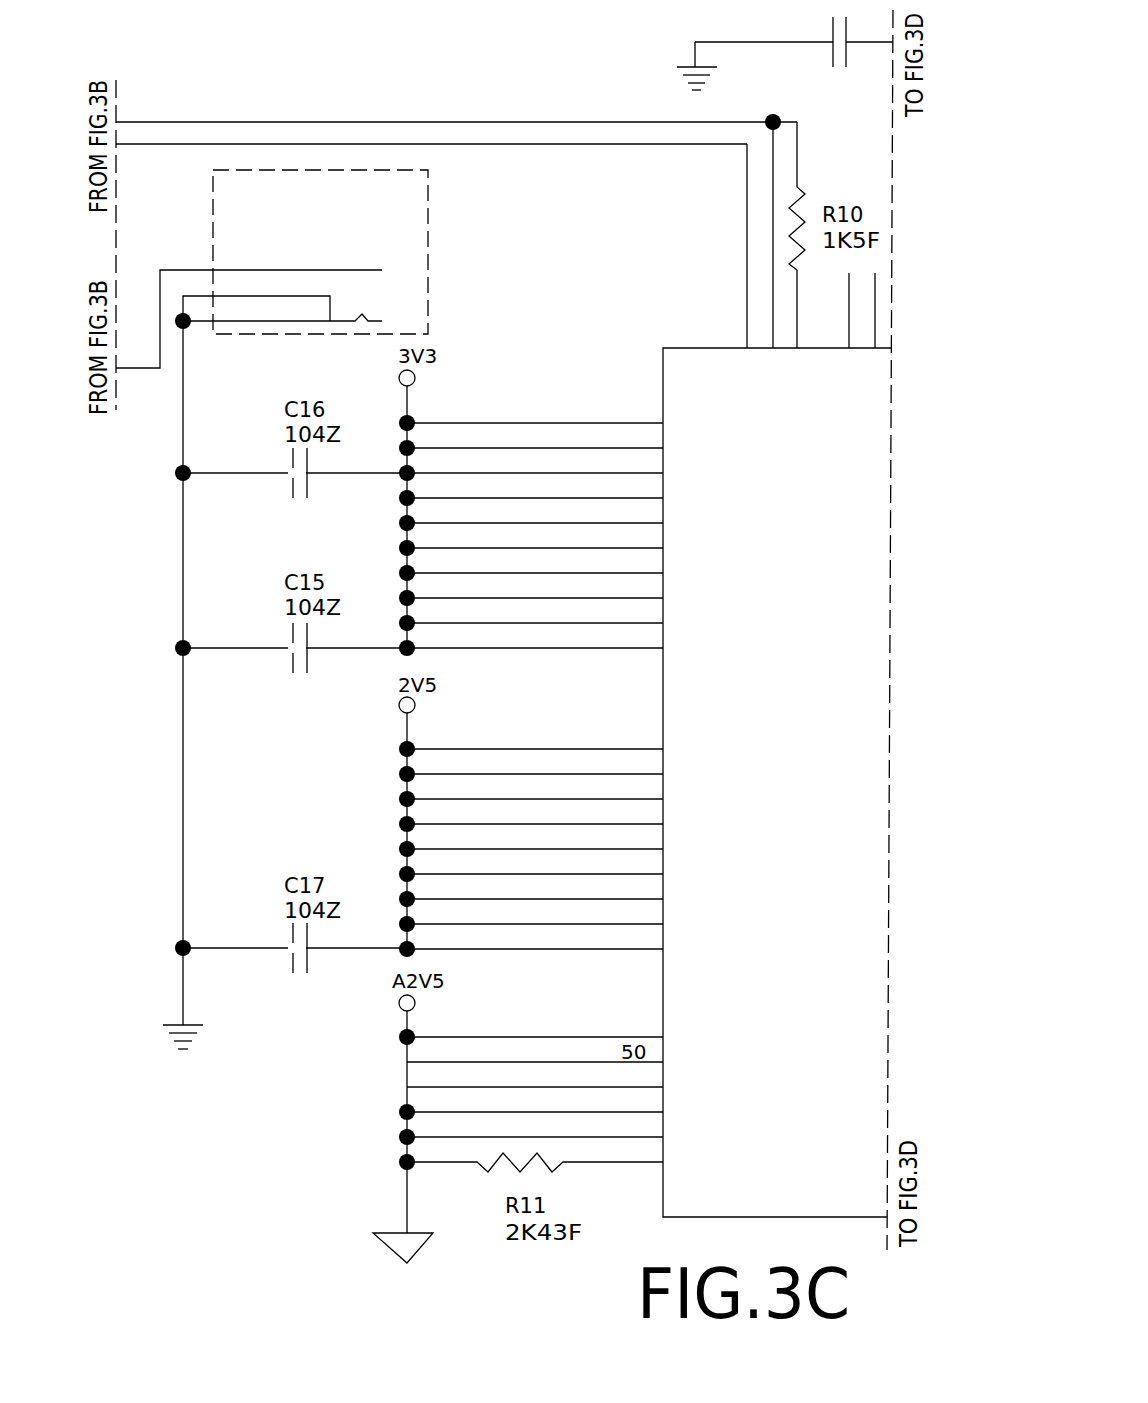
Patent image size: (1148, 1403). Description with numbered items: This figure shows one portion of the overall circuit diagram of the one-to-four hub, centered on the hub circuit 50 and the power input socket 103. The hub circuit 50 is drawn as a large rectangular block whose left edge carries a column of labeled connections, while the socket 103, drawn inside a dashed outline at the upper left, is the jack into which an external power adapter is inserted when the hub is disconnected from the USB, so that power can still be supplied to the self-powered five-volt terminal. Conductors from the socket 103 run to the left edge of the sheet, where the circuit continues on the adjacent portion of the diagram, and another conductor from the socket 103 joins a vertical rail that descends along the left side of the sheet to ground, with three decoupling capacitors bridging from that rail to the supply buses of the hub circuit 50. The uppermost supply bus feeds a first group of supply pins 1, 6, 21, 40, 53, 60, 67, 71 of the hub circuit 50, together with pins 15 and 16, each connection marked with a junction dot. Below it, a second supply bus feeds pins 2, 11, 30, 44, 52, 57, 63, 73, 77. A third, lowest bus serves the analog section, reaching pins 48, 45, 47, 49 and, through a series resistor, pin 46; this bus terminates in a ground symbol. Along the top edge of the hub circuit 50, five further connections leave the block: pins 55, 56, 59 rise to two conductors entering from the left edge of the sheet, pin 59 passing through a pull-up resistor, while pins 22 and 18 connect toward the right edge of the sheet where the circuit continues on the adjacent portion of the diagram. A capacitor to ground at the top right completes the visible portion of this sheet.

The socket 103 is at (413, 232).
The hub circuit 50 is at (678, 377).
The U1 pin 1 VDD33 1 is at (535, 413).
The U1 pin 6 VDD33 6 is at (535, 438).
The U1 pin 21 VDD33 21 is at (535, 463).
The U1 pin 40 VDD33 40 is at (535, 488).
The U1 pin 53 VDD33 53 is at (535, 513).
The U1 pin 60 VDD33 60 is at (535, 538).
The U1 pin 67 VDD33 67 is at (535, 563).
The U1 pin 71 VDD33 71 is at (535, 588).
The U1 pin 15 BUS_SELF 15 is at (535, 613).
The U1 pin 16 LPWRM 16 is at (535, 638).
The U1 pin 2 VDD25 2 is at (535, 739).
The U1 pin 11 VDD25 11 is at (535, 764).
The U1 pin 30 VDD25 30 is at (535, 789).
The U1 pin 44 VDD25 44 is at (535, 814).
The U1 pin 52 VDD25 52 is at (535, 839).
The U1 pin 57 VDD25 57 is at (535, 864).
The U1 pin 63 VDD25 63 is at (535, 889).
The U1 pin 73 VDD25 73 is at (535, 914).
The U1 pin 77 VDD25 77 is at (535, 939).
The U1 pin 48 AVDD 48 is at (535, 1027).
The U1 pin 45 AVSS 45 is at (535, 1077).
The U1 pin 47 AVSS(R) 47 is at (535, 1102).
The U1 pin 49 AVSS 49 is at (535, 1127).
The U1 pin 46 RREF 46 is at (535, 1156).
The U1 pin 55 DMU 55 is at (736, 246).
The U1 pin 56 DPU 56 is at (763, 235).
The U1 pin 59 RPU 59 is at (790, 235).
The U1 pin 22 AMBER 22 is at (838, 310).
The U1 pin 18 SCL 18 is at (865, 310).